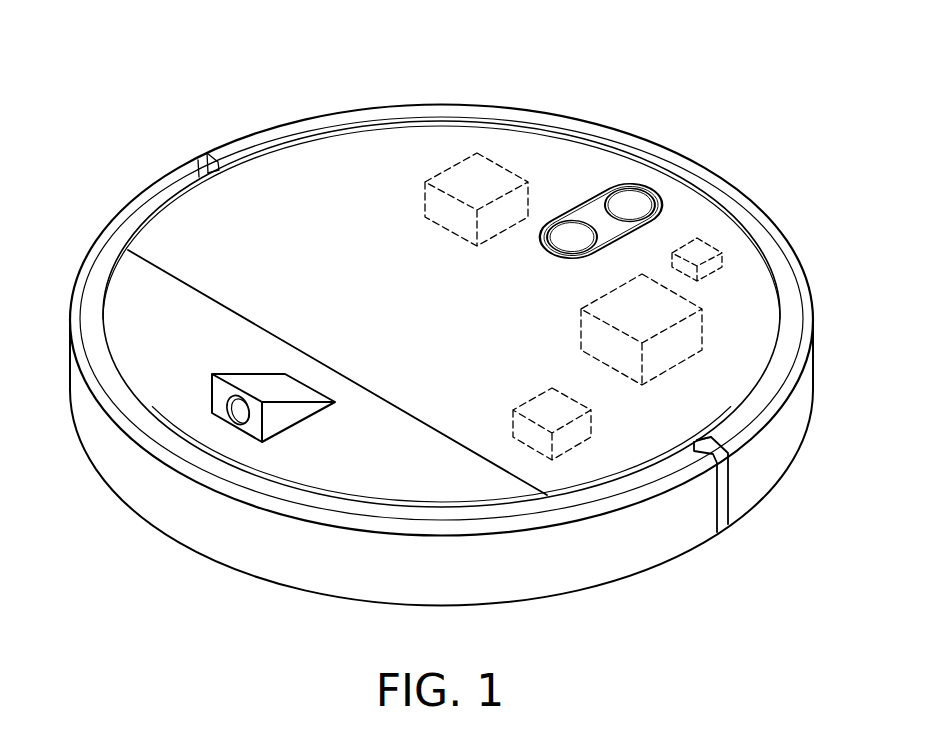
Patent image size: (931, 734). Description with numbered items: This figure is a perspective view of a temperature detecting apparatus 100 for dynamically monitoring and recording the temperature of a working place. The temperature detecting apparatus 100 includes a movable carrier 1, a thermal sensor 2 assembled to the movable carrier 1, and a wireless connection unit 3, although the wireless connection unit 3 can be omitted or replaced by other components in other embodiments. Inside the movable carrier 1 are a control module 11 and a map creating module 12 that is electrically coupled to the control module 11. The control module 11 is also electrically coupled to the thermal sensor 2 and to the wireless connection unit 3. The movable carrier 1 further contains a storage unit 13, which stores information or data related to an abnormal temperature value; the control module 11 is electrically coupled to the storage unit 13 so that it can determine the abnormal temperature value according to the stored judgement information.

The temperature detecting apparatus 100 is at (763, 131).
The movable carrier 1 is at (324, 114).
The thermal sensor 2 is at (222, 400).
The wireless connection unit 3 is at (710, 243).
The control module 11 is at (688, 332).
The map creating module 12 is at (463, 177).
The storage unit 13 is at (566, 438).